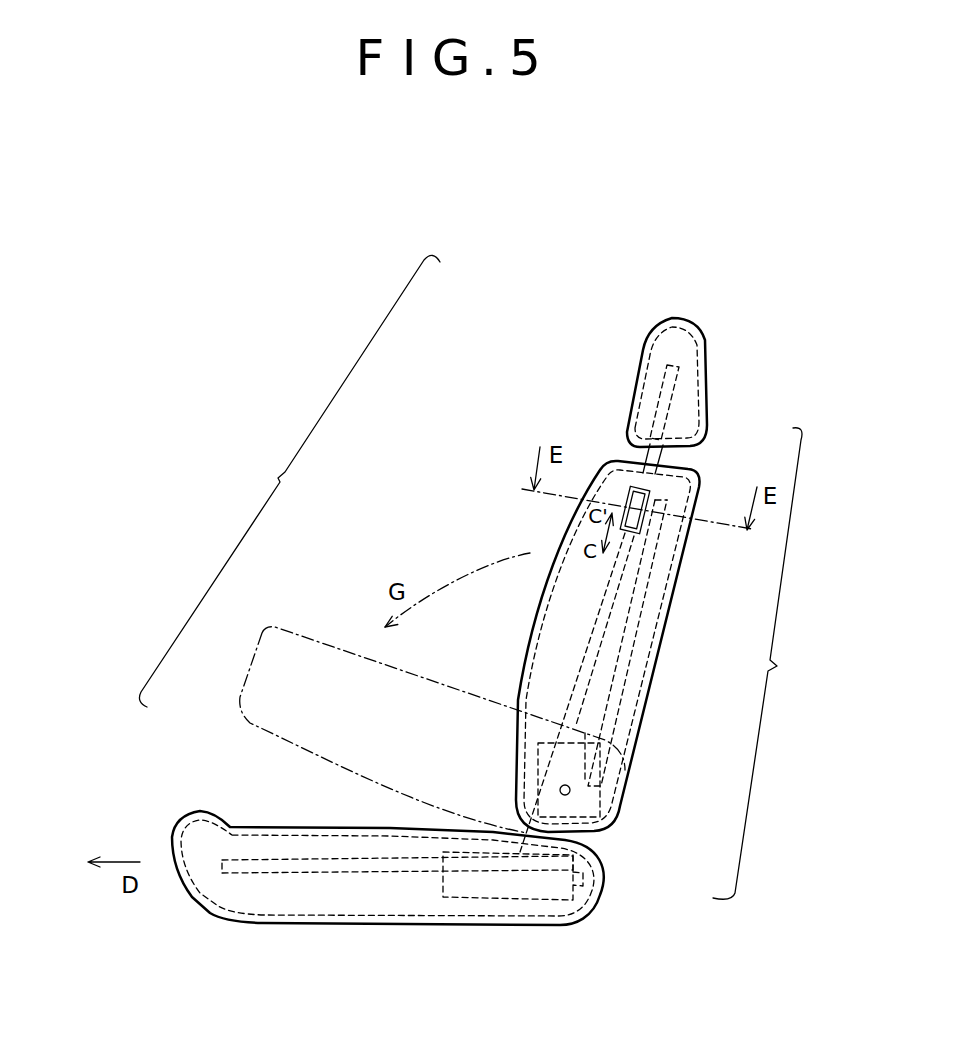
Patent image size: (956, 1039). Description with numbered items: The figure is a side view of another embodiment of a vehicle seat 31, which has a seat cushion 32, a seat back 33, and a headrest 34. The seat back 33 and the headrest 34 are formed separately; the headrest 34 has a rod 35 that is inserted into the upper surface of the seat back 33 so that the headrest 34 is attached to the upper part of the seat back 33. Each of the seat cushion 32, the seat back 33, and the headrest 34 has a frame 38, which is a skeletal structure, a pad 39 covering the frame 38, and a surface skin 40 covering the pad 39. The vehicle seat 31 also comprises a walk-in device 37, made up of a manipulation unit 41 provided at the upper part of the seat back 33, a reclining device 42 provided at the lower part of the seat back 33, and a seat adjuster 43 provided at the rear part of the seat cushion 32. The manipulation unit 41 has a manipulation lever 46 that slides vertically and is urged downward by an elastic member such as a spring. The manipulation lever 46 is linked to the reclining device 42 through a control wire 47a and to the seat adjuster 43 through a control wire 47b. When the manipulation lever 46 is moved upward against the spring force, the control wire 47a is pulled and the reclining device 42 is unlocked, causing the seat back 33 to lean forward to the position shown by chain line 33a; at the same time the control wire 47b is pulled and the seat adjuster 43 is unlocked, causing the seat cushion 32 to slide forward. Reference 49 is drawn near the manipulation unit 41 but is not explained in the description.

The vehicle seat 31 is at (289, 481).
The seat cushion 32 is at (226, 752).
The seat back 33 is at (457, 479).
The chain line 33a is at (293, 625).
The headrest 34 is at (553, 327).
The rod 35 is at (648, 450).
The walk-in device 37 is at (759, 663).
The frame 38 is at (670, 387).
The pad 39 is at (660, 327).
The surface skin 40 is at (640, 344).
The manipulation unit 41 is at (645, 550).
The reclining device 42 is at (577, 803).
The seat adjuster 43 is at (600, 888).
The manipulation lever 46 is at (643, 524).
The control wire 47a is at (638, 637).
The control wire 47b is at (580, 672).
The actuator 49 is at (660, 495).